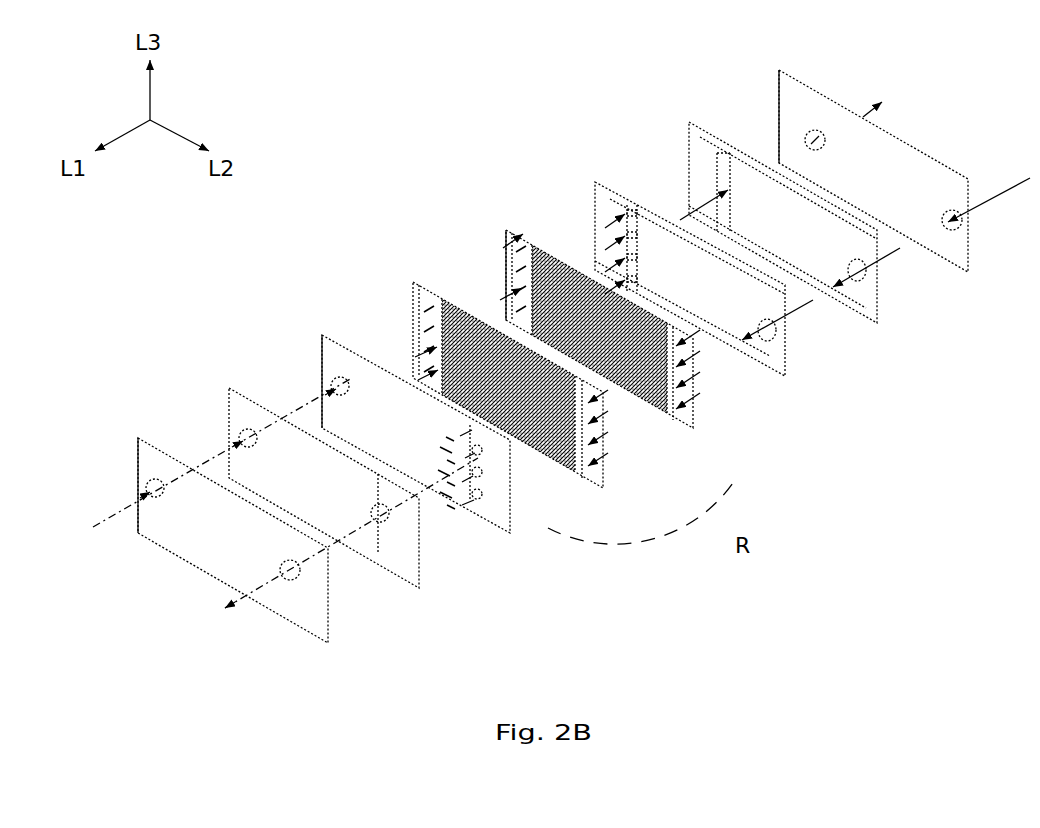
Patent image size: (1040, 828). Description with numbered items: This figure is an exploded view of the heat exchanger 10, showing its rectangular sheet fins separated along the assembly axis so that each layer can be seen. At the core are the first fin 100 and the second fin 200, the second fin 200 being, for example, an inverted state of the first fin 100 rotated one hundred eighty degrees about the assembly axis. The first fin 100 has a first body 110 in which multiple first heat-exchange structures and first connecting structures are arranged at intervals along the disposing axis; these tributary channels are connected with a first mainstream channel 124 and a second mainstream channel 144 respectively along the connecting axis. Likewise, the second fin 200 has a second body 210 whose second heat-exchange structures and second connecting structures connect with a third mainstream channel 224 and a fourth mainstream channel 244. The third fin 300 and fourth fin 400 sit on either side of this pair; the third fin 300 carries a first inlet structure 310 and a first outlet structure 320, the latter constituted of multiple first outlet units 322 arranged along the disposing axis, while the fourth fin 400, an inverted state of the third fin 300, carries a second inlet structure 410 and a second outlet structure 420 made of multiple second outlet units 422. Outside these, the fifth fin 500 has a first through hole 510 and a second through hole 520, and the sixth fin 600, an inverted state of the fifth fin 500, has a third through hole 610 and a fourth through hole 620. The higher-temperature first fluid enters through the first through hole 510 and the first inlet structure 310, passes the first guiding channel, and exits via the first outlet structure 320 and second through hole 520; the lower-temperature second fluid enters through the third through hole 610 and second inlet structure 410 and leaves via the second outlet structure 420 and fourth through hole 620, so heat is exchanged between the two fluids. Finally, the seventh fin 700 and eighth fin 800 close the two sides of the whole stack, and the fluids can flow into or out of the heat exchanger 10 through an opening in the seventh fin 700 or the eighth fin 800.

The heat exchanger 10 is at (974, 683).
The first fin 100 is at (624, 309).
The first body 110 is at (693, 415).
The first mainstream channel 124 is at (693, 382).
The second mainstream channel 144 is at (517, 263).
The second fin 200 is at (511, 349).
The second body 210 is at (602, 463).
The third mainstream channel 224 is at (430, 315).
The fourth mainstream channel 244 is at (593, 433).
The third fin 300 is at (691, 237).
The first inlet structure 310 is at (770, 333).
The first outlet structure 320 is at (608, 225).
The first outlet units 322 is at (623, 208).
The fourth fin 400 is at (428, 435).
The second inlet structure 410 is at (335, 377).
The second outlet structure 420 is at (485, 488).
The second outlet units 422 is at (480, 503).
The fifth fin 500 is at (783, 184).
The first through hole 510 is at (865, 282).
The second through hole 520 is at (718, 163).
The sixth fin 600 is at (313, 474).
The third through hole 610 is at (243, 427).
The fourth through hole 620 is at (388, 553).
The seventh fin 700 is at (920, 130).
The eighth fin 800 is at (137, 428).